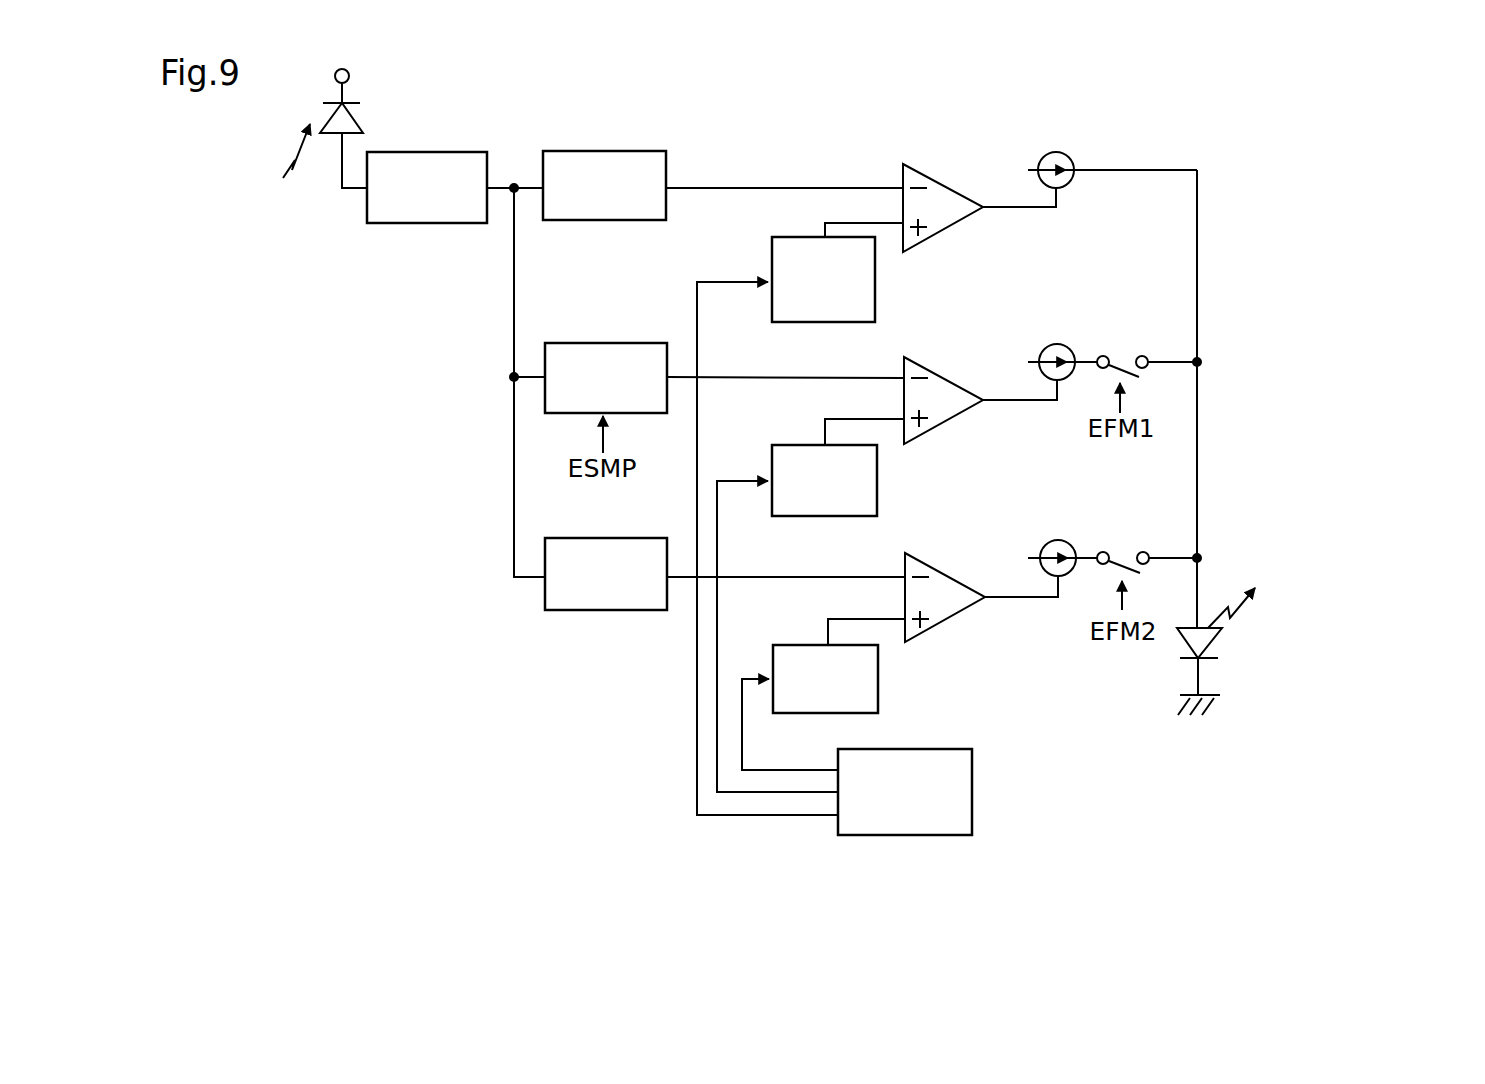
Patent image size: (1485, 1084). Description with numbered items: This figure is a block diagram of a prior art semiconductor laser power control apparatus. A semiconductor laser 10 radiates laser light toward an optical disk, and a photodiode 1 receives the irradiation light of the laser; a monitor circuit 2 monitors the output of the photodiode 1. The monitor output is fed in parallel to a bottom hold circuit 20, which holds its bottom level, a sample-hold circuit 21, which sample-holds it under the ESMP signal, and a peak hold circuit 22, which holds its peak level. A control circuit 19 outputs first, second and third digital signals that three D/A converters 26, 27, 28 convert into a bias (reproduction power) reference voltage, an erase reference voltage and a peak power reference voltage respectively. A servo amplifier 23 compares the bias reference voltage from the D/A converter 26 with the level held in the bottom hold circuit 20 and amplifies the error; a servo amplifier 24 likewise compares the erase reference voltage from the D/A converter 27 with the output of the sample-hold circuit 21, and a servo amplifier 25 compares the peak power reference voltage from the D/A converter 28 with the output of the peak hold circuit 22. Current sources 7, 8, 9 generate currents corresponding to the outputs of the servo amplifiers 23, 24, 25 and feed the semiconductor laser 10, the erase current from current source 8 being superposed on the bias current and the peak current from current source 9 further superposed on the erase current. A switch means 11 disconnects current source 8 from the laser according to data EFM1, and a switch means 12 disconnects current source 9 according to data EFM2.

The photodiode 1 is at (362, 115).
The monitor circuit 2 is at (443, 223).
The current source 7 is at (1070, 150).
The current source 8 is at (1065, 345).
The current source 9 is at (1070, 578).
The semiconductor laser 10 is at (1215, 645).
The switch means 11 is at (1128, 350).
The switch means 12 is at (1125, 548).
The control circuit 19 is at (893, 835).
The bottom hold circuit 20 is at (597, 150).
The sample-hold circuit 21 is at (597, 343).
The peak hold circuit 22 is at (632, 610).
The servo amplifier 23 is at (935, 175).
The servo amplifier 24 is at (935, 368).
The servo amplifier 25 is at (940, 562).
The D/A converter 26 is at (772, 262).
The D/A converter 27 is at (772, 462).
The D/A converter 28 is at (790, 645).